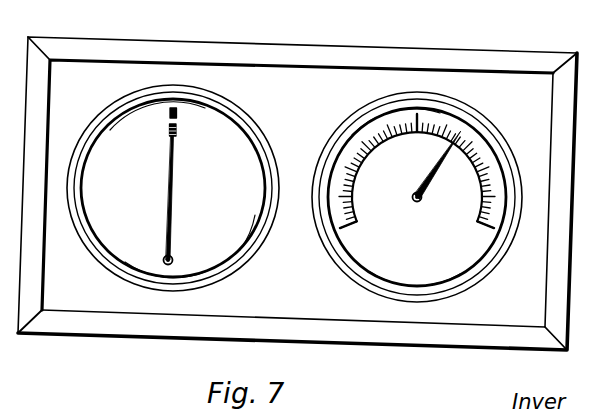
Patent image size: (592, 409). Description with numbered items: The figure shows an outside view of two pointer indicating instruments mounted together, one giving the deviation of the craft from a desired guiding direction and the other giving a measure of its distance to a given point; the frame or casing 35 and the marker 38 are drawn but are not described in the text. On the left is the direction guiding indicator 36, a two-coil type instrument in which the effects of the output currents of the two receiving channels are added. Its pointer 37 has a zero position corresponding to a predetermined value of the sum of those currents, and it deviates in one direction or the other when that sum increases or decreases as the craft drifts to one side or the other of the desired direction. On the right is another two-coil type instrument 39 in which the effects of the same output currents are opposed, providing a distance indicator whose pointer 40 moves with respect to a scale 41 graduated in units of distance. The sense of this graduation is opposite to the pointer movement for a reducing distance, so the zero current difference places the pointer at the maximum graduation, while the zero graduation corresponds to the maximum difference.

The housing frame 35 is at (357, 328).
The direction guiding indicator 36 is at (218, 135).
The pointer 37 is at (171, 230).
The set marker 38 is at (177, 113).
The two coil type instrument 39 is at (432, 145).
The pointer 40 is at (437, 172).
The scale graduated in units of distance 41 is at (347, 143).